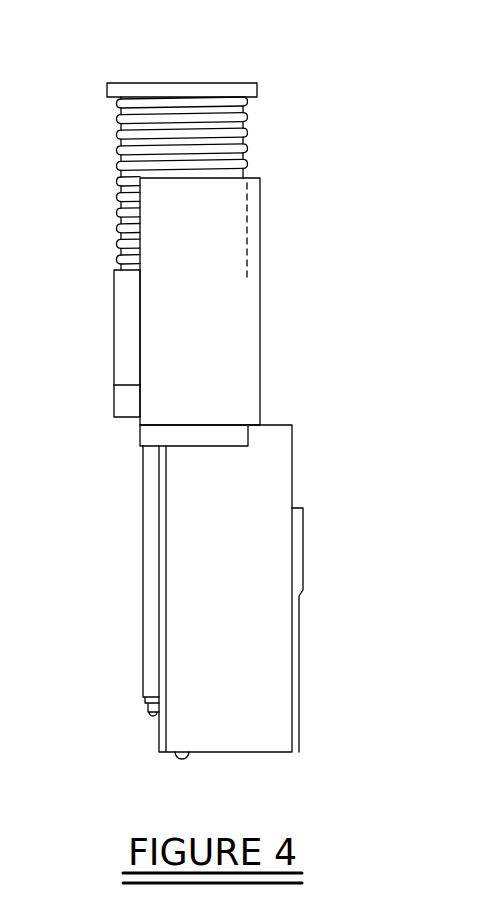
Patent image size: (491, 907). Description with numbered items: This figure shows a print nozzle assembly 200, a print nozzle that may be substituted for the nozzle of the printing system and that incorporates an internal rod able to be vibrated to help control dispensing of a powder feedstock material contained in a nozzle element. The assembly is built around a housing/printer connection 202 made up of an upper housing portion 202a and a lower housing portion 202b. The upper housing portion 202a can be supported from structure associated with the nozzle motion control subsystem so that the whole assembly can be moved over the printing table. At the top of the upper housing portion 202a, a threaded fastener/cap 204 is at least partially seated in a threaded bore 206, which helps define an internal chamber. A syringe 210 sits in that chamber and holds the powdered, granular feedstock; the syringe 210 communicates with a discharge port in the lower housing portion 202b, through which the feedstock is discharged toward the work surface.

The print nozzle assembly 200 is at (244, 67).
The threaded fastener/cap 204 is at (243, 136).
The threaded bore 206 is at (248, 230).
The housing/printer connection 202 is at (293, 438).
The upper housing portion 202a is at (243, 318).
The lower housing portion 202b is at (265, 670).
The syringe 210 is at (150, 622).